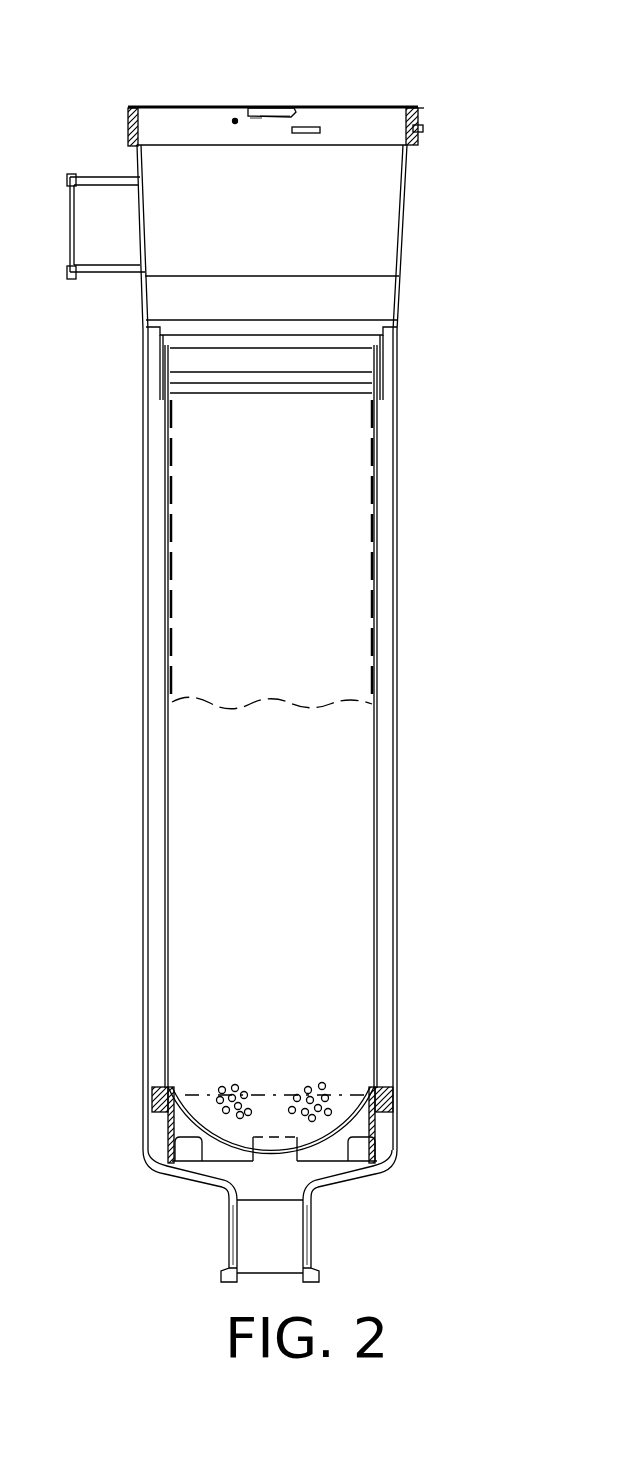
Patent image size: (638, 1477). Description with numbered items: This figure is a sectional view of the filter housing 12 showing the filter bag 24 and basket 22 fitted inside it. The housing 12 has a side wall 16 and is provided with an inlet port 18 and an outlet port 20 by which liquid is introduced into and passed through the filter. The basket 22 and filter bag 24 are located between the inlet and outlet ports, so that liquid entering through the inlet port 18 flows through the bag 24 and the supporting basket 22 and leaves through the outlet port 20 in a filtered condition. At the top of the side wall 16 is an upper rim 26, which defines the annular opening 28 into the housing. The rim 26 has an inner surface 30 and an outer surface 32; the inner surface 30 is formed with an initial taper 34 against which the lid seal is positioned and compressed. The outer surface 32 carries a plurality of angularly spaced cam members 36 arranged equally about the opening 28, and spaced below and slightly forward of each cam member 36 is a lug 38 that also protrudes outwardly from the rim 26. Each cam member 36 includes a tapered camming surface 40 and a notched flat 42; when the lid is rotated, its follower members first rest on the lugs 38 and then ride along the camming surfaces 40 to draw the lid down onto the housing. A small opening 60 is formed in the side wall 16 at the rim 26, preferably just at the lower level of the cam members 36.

The housing 12 is at (422, 511).
The side wall 16 is at (145, 476).
The inlet port 18 is at (93, 275).
The outlet port 20 is at (323, 1228).
The basket 22 is at (167, 523).
The filter bag 24 is at (372, 443).
The upper rim 26 is at (392, 107).
The annular opening 28 is at (193, 115).
The inner surface 30 is at (398, 135).
The outer surface 32 is at (414, 136).
The initial taper 34 is at (147, 107).
The cam member 36 is at (278, 108).
The lug 38 is at (423, 129).
The tapered camming surface 40 is at (280, 112).
The notched flat 42 is at (258, 117).
The small opening 60 is at (235, 119).